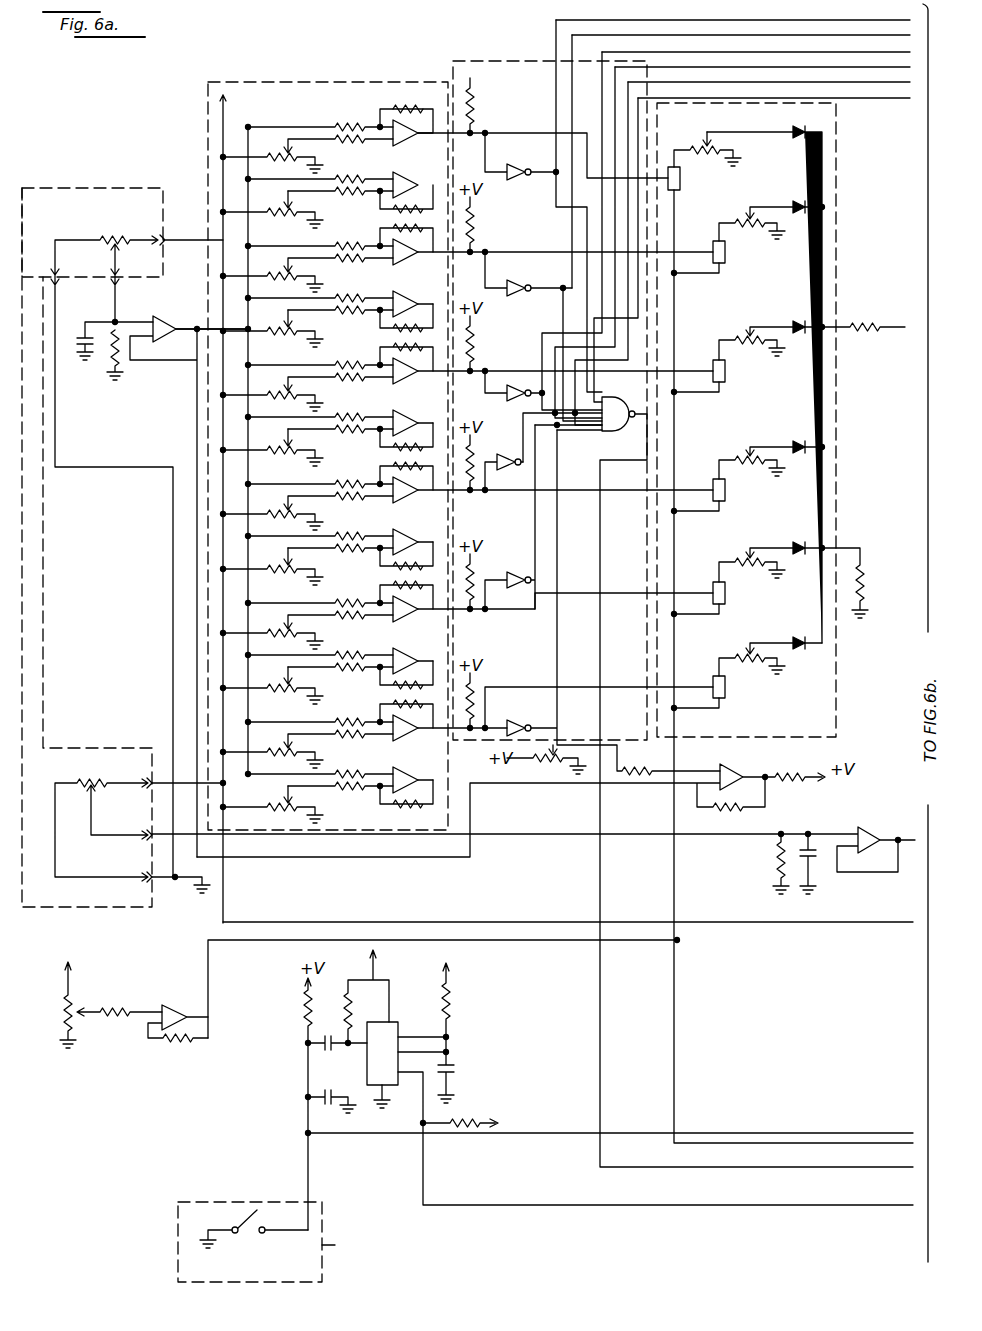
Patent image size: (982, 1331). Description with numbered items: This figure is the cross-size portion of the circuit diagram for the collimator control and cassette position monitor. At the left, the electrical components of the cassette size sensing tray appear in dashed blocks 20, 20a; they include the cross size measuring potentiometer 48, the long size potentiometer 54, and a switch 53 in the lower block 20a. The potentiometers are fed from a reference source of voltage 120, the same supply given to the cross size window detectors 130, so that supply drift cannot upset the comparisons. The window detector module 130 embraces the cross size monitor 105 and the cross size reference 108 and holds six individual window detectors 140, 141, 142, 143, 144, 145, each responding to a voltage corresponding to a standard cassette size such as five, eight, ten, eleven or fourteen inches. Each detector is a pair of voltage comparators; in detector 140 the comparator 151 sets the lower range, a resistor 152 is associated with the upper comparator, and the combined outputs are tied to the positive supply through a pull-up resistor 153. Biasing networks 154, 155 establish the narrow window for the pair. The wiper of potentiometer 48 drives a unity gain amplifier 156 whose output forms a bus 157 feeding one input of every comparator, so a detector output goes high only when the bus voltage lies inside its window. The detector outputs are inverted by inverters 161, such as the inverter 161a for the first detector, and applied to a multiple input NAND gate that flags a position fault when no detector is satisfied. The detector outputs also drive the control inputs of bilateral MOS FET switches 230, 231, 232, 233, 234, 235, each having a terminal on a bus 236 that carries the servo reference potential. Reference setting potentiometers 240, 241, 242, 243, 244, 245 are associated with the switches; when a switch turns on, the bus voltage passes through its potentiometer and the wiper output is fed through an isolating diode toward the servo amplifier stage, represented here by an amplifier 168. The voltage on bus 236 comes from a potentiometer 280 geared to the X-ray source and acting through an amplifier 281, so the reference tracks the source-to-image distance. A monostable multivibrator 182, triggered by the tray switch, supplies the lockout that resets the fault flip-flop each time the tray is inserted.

The cassette size sensing tray electrical components 20 is at (86, 912).
The cassette size sensing tray electrical components 20a is at (346, 1246).
The cross size measuring potentiometer 48 is at (117, 236).
The switch 53 is at (247, 1206).
The long size measuring potentiometer 54 is at (92, 772).
The cross size monitor 105 is at (413, 65).
The cross size reference 108 is at (282, 65).
The reference source of voltage 120 is at (238, 114).
The cross size window detectors 130 is at (346, 71).
The window detector 140 is at (327, 156).
The window detector 141 is at (392, 282).
The window detector 142 is at (392, 404).
The window detector 143 is at (392, 522).
The window detector 144 is at (392, 642).
The window detector 145 is at (392, 762).
The voltage comparator 151 is at (382, 171).
The feedback resistor 152 is at (426, 118).
The pull-up resistor 153 is at (475, 105).
The biasing network 154 is at (278, 152).
The biasing network 155 is at (282, 167).
The unity gain amplifier 156 is at (170, 316).
The bus 157 is at (245, 313).
The inverters 161 is at (527, 130).
The inverter 161a is at (515, 194).
The output amplifier 168 is at (864, 824).
The monostable multivibrator 182 is at (391, 1021).
The bilateral MOS FET switch 230 is at (682, 179).
The bilateral MOS FET switch 231 is at (726, 262).
The bilateral MOS FET switch 232 is at (726, 380).
The bilateral MOS FET switch 233 is at (726, 493).
The bilateral MOS FET switch 234 is at (726, 594).
The bilateral MOS FET switch 235 is at (726, 689).
The bus 236 is at (675, 878).
The reference setting means 240 is at (724, 148).
The reference setting means 241 is at (749, 216).
The reference setting means 242 is at (743, 334).
The reference setting means 243 is at (749, 456).
The reference setting means 244 is at (749, 556).
The reference setting means 245 is at (749, 653).
The potentiometer 280 is at (60, 1020).
The amplifier 281 is at (172, 1007).